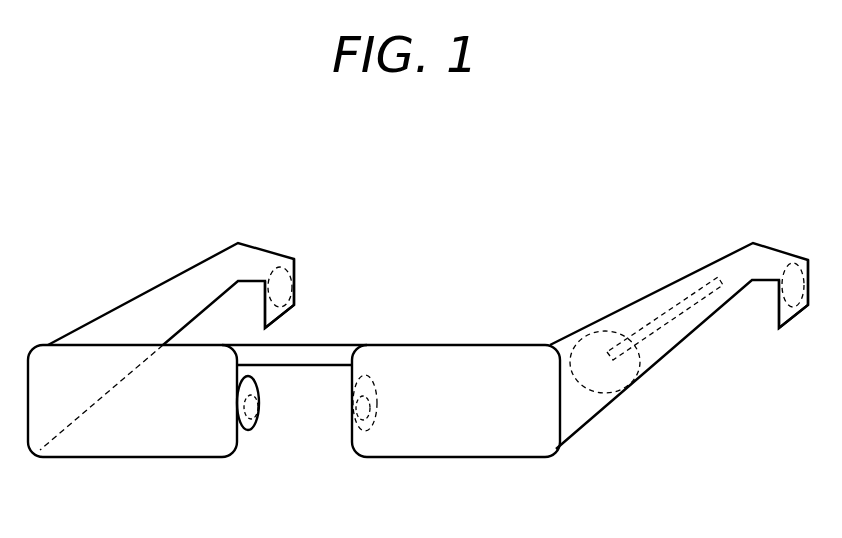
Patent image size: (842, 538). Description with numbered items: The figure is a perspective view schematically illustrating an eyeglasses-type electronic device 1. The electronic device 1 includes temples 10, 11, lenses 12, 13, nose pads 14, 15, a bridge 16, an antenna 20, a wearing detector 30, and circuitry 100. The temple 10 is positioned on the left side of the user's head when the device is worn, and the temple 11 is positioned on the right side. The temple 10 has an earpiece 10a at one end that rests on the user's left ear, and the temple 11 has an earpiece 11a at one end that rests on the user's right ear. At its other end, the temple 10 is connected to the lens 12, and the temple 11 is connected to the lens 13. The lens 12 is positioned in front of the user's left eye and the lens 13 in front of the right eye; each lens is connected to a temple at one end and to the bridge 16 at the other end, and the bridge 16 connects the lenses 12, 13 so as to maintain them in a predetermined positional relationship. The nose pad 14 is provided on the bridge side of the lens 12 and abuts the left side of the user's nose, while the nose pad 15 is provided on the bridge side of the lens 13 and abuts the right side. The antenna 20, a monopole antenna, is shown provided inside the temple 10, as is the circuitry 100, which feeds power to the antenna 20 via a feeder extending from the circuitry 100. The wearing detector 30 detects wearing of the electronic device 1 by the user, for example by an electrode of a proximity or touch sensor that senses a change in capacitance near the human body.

The electronic device 1 is at (451, 228).
The temple 10 is at (658, 290).
The earpiece 10a is at (797, 258).
The temple 11 is at (142, 292).
The earpiece 11a is at (293, 262).
The lens 12 is at (462, 427).
The lens 13 is at (137, 430).
The nose pad 14 is at (372, 423).
The nose pad 15 is at (252, 428).
The bridge 16 is at (312, 343).
The antenna 20 is at (677, 322).
The wearing detector 30 is at (277, 270).
The circuitry 100 is at (592, 345).